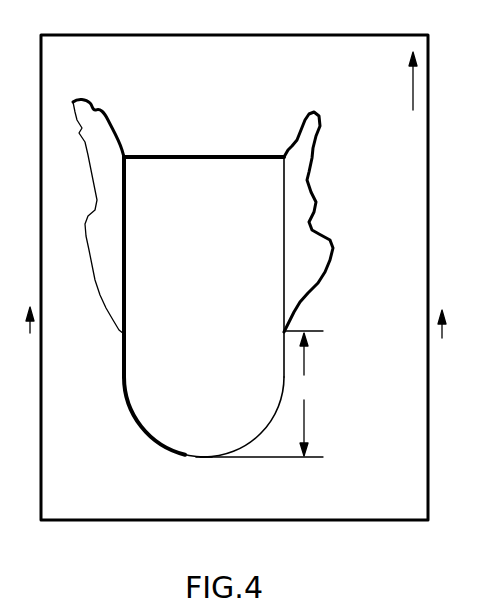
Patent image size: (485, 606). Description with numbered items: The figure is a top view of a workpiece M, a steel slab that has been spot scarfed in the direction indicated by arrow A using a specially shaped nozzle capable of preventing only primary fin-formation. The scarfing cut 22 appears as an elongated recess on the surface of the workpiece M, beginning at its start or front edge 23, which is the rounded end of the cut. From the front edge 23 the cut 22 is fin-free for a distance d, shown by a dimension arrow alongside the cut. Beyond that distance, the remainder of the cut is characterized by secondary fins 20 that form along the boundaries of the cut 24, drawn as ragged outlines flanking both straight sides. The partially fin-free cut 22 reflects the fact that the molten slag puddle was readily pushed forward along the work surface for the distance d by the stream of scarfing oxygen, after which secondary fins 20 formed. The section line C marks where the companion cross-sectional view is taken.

The secondary fins 20 is at (106, 178).
The scarfing cut 22 is at (145, 413).
The front edge of the cut 23 is at (193, 459).
The boundaries of the cut 24 is at (122, 356).
The fin-free distance d is at (261, 394).
The scarfing direction arrow A is at (413, 90).
The section line C is at (234, 341).
The workpiece M is at (403, 513).